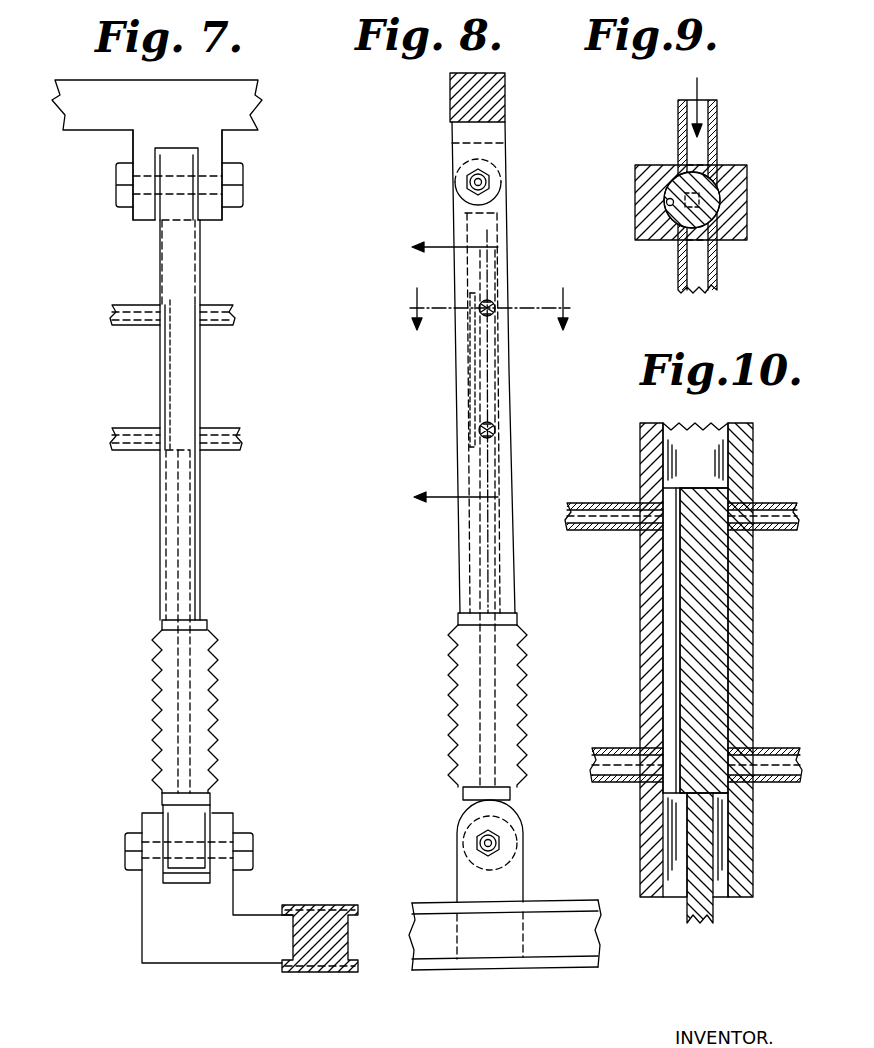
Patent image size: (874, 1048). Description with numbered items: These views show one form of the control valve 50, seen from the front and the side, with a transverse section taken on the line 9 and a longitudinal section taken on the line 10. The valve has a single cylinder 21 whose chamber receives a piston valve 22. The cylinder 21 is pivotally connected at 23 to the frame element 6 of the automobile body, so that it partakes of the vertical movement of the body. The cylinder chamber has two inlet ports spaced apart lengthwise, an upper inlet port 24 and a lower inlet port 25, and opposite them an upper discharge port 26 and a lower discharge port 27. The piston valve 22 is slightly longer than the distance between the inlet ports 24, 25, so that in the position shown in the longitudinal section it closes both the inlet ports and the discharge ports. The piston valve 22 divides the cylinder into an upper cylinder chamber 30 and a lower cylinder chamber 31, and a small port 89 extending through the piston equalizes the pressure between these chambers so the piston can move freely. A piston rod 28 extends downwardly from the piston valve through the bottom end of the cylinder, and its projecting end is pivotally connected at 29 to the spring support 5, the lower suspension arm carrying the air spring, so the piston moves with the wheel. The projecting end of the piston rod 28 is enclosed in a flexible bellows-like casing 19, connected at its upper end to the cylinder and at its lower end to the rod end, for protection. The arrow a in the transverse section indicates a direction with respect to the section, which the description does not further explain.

In FIG. 7, the spring support 5 is at (314, 906).
In FIG. 8, the spring support 5 is at (552, 920).
In FIG. 7, the frame element 6 is at (240, 94).
In FIG. 8, the frame element 6 is at (497, 95).
In FIG. 8, the section line 9— 9 is at (490, 323).
In FIG. 8, the section line 10— 10 is at (440, 373).
In FIG. 7, the flexible bellows-like casing 19 is at (218, 688).
In FIG. 8, the flexible bellows-like casing 19 is at (452, 741).
In FIG. 7, the cylinder 21 is at (201, 358).
In FIG. 8, the cylinder 21 is at (512, 378).
In FIG. 9, the cylinder 21 is at (641, 232).
In FIG. 10, the cylinder 21 is at (754, 628).
In FIG. 9, the piston valve 22 is at (720, 200).
In FIG. 10, the piston valve 22 is at (697, 571).
In FIG. 7, the pivotal connection 23 is at (198, 184).
In FIG. 8, the pivotal connection 23 is at (466, 182).
In FIG. 7, the upper inlet port 24 is at (163, 306).
In FIG. 9, the upper inlet port 24 is at (700, 163).
In FIG. 10, the upper inlet port 24 is at (648, 503).
In FIG. 7, the lower inlet port 25 is at (160, 452).
In FIG. 10, the lower inlet port 25 is at (660, 767).
In FIG. 7, the upper discharge port 26 is at (201, 308).
In FIG. 8, the upper discharge port 26 is at (495, 303).
In FIG. 9, the upper discharge port 26 is at (715, 240).
In FIG. 10, the upper discharge port 26 is at (756, 503).
In FIG. 7, the lower discharge port 27 is at (203, 452).
In FIG. 8, the lower discharge port 27 is at (497, 432).
In FIG. 10, the lower discharge port 27 is at (741, 776).
In FIG. 7, the piston rod 28 is at (176, 520).
In FIG. 8, the piston rod 28 is at (480, 673).
In FIG. 10, the piston rod 28 is at (697, 908).
In FIG. 7, the pivotal connection 29 is at (254, 848).
In FIG. 8, the pivotal connection 29 is at (478, 842).
In FIG. 7, the upper cylinder chamber 30 is at (180, 270).
In FIG. 10, the upper cylinder chamber 30 is at (695, 455).
In FIG. 7, the lower cylinder chamber 31 is at (193, 552).
In FIG. 10, the lower cylinder chamber 31 is at (678, 826).
In FIG. 7, the control valve 50 is at (160, 356).
In FIG. 8, the control valve 50 is at (512, 336).
In FIG. 7, the small port 89 is at (168, 395).
In FIG. 8, the small port 89 is at (472, 386).
In FIG. 9, the small port 89 is at (667, 203).
In FIG. 10, the small port 89 is at (679, 651).
In FIG. 9, the direction arrow a is at (702, 105).